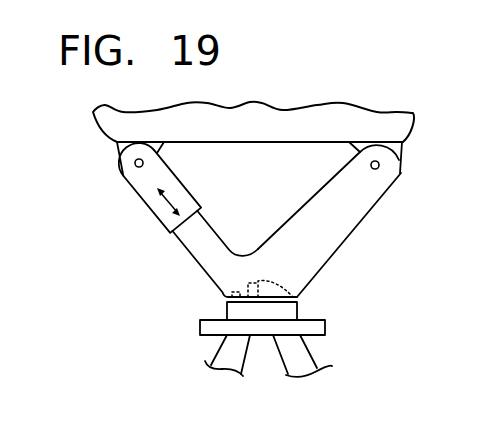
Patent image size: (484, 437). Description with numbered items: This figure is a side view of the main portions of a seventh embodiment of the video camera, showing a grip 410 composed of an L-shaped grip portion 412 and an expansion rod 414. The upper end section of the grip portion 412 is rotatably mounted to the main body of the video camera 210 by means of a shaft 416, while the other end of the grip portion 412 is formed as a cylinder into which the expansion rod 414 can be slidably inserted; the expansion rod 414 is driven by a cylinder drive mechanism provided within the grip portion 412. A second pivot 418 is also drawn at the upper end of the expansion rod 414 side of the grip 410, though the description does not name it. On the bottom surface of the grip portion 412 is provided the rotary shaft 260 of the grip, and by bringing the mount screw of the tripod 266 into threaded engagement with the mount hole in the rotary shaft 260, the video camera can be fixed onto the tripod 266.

The main body of the video camera 210 is at (272, 137).
The grip 410 is at (354, 243).
The grip portion 412 is at (365, 200).
The expansion rod 414 is at (162, 215).
The shaft 416 is at (383, 168).
The left pivot 418 is at (134, 166).
The rotary shaft 260 is at (300, 297).
The tripod 266 is at (325, 328).